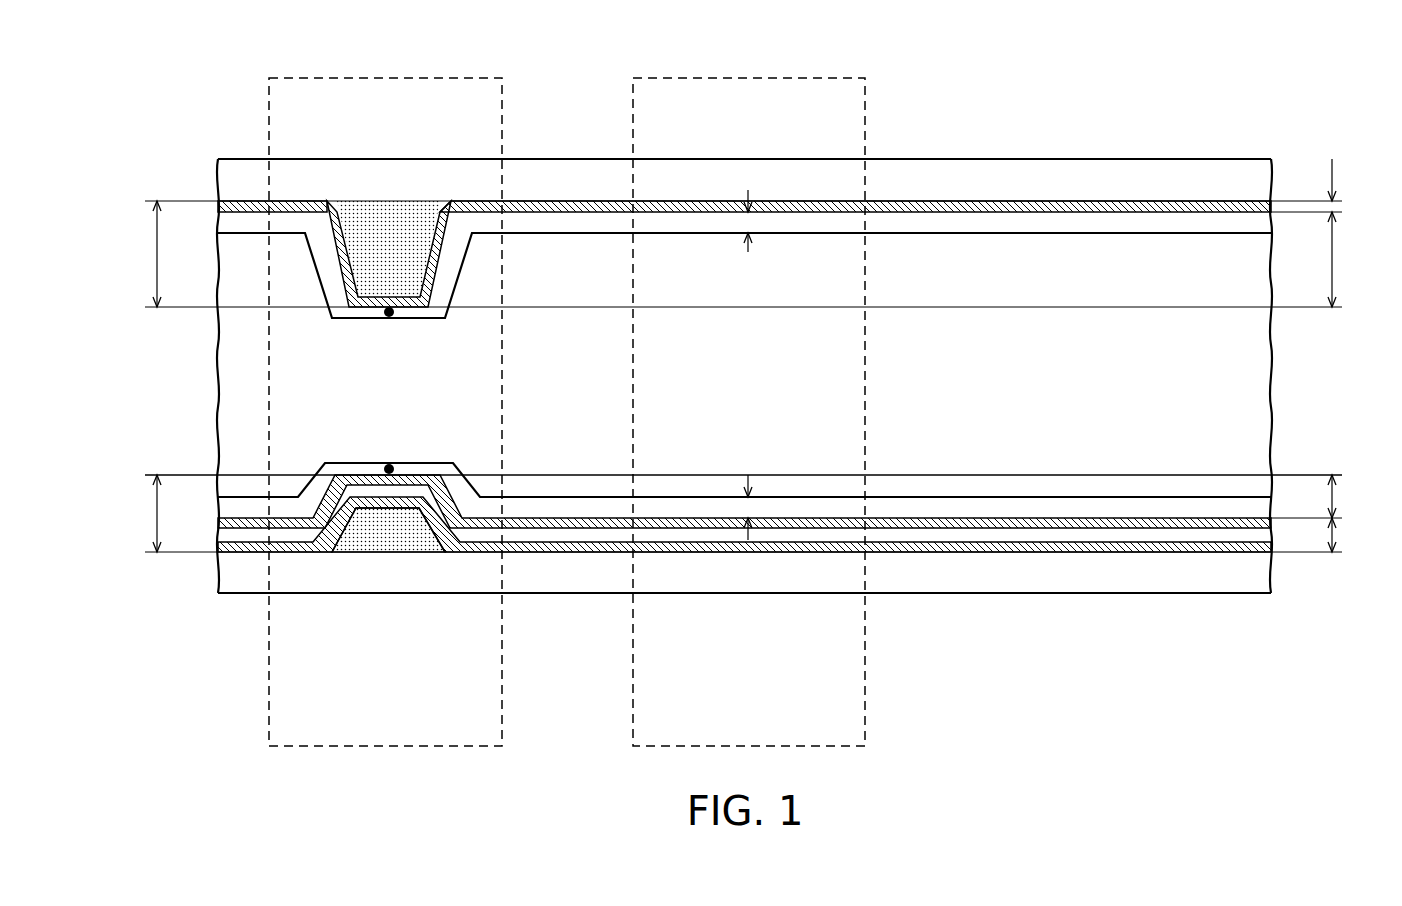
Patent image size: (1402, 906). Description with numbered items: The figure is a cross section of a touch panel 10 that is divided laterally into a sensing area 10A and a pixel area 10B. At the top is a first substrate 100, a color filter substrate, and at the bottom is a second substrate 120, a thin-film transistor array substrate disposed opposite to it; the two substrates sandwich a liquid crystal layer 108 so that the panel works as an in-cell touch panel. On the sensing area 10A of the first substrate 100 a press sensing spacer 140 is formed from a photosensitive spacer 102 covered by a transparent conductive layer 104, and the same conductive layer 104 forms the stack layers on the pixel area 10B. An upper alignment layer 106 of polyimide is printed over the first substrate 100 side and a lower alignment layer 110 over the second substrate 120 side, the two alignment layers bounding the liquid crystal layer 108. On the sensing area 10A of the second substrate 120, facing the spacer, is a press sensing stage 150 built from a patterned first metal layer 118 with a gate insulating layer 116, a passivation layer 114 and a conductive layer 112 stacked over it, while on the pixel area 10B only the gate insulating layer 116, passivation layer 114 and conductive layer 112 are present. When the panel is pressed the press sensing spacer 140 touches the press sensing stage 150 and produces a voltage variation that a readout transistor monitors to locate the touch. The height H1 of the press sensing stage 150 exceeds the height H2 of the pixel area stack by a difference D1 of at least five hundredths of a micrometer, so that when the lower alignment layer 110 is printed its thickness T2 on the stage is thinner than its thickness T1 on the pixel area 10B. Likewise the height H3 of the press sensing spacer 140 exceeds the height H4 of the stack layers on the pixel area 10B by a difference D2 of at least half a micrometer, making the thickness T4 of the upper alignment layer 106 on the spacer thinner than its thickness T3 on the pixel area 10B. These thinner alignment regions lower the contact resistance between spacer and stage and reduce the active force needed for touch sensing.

The touch panel 10 is at (1274, 86).
The sensing area 10A is at (269, 707).
The pixel area 10B is at (633, 707).
The first substrate 100 is at (1007, 175).
The photosensitive spacer 102 is at (391, 222).
The conductive layer 104 is at (1087, 200).
The upper alignment layer 106 is at (1163, 222).
The liquid crystal layer 108 is at (1248, 377).
The lower alignment layer 110 is at (921, 507).
The conductive layer 112 is at (994, 525).
The passivation layer 114 is at (1075, 535).
The gate insulating layer 116 is at (1135, 545).
The first metal layer 118 is at (387, 560).
The second substrate 120 is at (1217, 568).
The press sensing spacer 140 is at (443, 272).
The press sensing stage 150 is at (452, 484).
The thickness of lower alignment layer on pixel area T1 is at (748, 508).
The thickness of lower alignment layer on press sensing stage T2 is at (389, 465).
The thickness of upper alignment layer on pixel area T3 is at (750, 220).
The thickness of upper alignment layer on press sensing spacer T4 is at (389, 317).
The height of press sensing stage H1 is at (136, 513).
The height of stack layers on pixel area H2 is at (1355, 535).
The height of press sensing spacer H3 is at (136, 254).
The height of stack layers on pixel area of first substrate H4 is at (1356, 196).
The difference between height H1 and height H2 D1 is at (1354, 496).
The difference between height H3 and height H4 D2 is at (1354, 270).